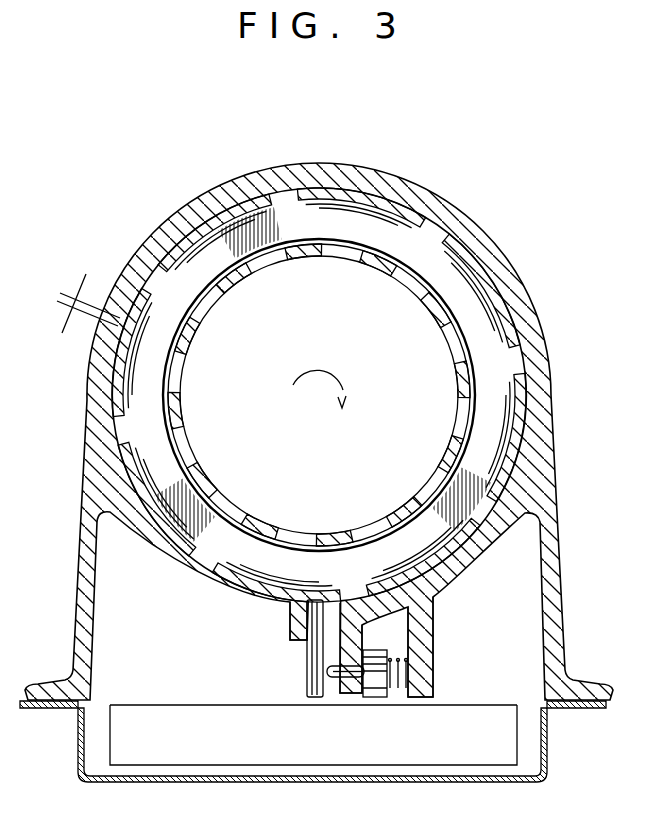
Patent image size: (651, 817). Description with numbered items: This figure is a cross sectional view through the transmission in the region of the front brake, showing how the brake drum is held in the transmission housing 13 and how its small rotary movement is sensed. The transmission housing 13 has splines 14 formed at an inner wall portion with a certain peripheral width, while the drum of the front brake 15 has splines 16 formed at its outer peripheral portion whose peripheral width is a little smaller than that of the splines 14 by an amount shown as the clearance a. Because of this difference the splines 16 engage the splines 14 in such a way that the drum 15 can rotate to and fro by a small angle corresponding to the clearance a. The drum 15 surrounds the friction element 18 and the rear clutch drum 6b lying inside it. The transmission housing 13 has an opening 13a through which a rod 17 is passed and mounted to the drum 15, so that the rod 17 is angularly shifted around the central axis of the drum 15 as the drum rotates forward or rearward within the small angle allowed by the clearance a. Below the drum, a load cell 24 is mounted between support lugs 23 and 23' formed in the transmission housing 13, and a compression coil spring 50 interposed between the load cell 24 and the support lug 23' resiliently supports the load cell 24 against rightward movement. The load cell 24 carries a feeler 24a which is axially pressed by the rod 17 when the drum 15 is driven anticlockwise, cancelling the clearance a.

The transmission housing 13 is at (369, 180).
The opening 13a is at (297, 617).
The splines 14 is at (282, 174).
The drum of the front brake 15 is at (229, 190).
The splines 16 is at (302, 192).
The friction element 18 is at (440, 267).
The rotor 6b is at (213, 308).
The clearance a is at (60, 293).
The rod 17 is at (307, 677).
The support lug 23 is at (372, 648).
The support lug 23' is at (450, 647).
The load cell 24 is at (373, 699).
The feeler 24a is at (332, 678).
The compression coil spring 50 is at (405, 690).